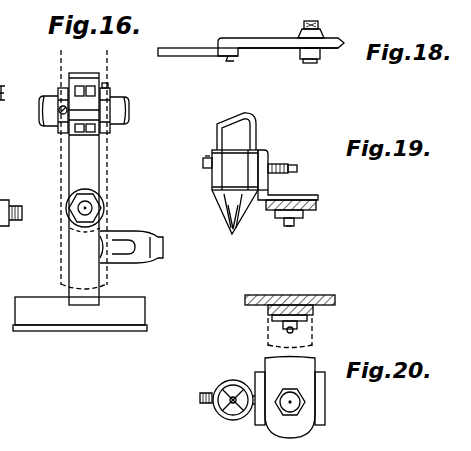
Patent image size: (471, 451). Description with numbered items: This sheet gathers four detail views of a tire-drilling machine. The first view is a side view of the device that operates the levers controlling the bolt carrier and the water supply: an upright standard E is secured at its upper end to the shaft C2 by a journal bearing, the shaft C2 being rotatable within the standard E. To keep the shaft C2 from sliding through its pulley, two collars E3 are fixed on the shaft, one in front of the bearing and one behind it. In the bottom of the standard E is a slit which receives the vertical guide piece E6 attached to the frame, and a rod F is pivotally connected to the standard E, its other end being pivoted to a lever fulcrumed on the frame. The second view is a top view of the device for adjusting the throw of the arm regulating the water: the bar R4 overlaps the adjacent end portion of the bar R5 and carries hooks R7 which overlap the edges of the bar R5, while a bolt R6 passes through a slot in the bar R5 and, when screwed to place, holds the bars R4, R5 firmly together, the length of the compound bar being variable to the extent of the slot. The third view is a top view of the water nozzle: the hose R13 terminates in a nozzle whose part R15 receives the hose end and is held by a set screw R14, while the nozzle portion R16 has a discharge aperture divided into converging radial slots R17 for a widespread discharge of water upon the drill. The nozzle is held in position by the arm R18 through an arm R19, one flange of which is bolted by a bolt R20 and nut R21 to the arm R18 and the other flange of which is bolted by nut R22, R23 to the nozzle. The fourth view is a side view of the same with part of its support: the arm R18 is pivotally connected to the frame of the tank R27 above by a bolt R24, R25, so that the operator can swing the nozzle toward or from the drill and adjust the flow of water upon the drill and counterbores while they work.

In FIG. 16, the standard E is at (86, 167).
In FIG. 16, the collars E3 is at (58, 95).
In FIG. 16, the shaft C2 is at (128, 110).
In FIG. 16, the rod F is at (146, 240).
In FIG. 16, the vertical guide piece E6 is at (136, 314).
In FIG. 18, the bar R5 is at (186, 51).
In FIG. 18, the bar R4 is at (256, 45).
In FIG. 18, the hooks R7 is at (228, 58).
In FIG. 18, the bolt R6 is at (318, 61).
In FIG. 19, the hose R13 is at (248, 125).
In FIG. 19, the set screw R14 is at (204, 160).
In FIG. 19, the nozzle part R15 is at (212, 178).
In FIG. 19, the nozzle portion R16 is at (218, 206).
In FIG. 19, the converging radial slots R17 is at (226, 216).
In FIG. 19, the arm R18 is at (316, 206).
In FIG. 20, the arm R18 is at (314, 310).
In FIG. 19, the arm R19 is at (304, 194).
In FIG. 19, the bolt R20 is at (292, 226).
In FIG. 19, the nut R21 is at (303, 216).
In FIG. 19, the nut R22 is at (284, 165).
In FIG. 19, the nut R23 is at (300, 165).
In FIG. 20, the bolt R24 is at (298, 326).
In FIG. 20, the bolt R25 is at (308, 318).
In FIG. 20, the tank R27 is at (332, 297).